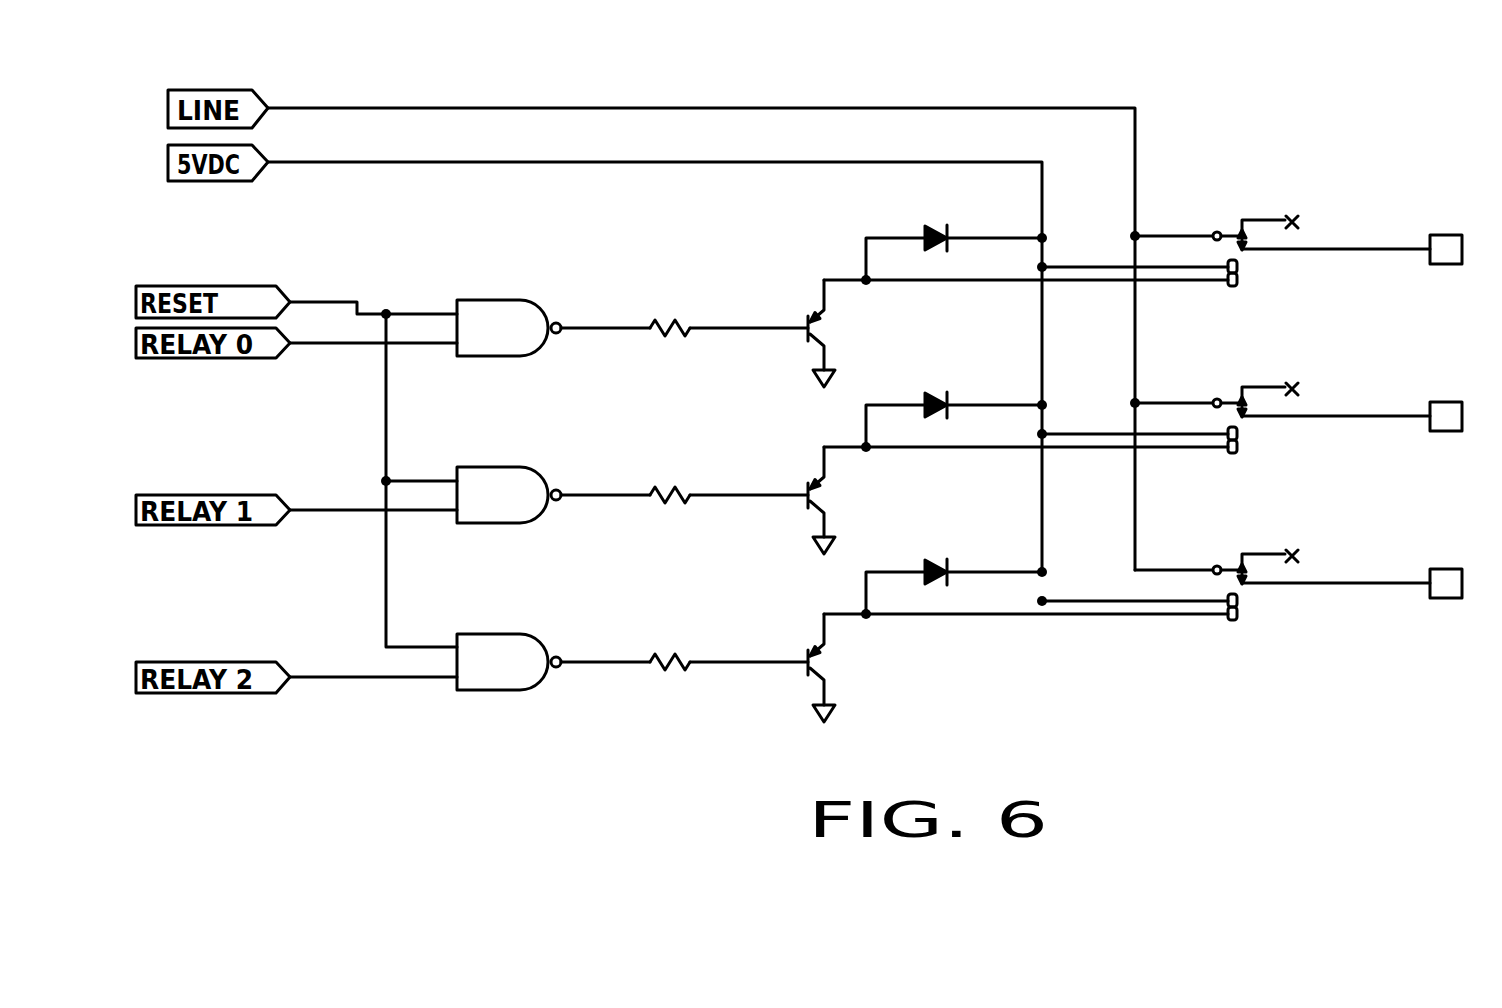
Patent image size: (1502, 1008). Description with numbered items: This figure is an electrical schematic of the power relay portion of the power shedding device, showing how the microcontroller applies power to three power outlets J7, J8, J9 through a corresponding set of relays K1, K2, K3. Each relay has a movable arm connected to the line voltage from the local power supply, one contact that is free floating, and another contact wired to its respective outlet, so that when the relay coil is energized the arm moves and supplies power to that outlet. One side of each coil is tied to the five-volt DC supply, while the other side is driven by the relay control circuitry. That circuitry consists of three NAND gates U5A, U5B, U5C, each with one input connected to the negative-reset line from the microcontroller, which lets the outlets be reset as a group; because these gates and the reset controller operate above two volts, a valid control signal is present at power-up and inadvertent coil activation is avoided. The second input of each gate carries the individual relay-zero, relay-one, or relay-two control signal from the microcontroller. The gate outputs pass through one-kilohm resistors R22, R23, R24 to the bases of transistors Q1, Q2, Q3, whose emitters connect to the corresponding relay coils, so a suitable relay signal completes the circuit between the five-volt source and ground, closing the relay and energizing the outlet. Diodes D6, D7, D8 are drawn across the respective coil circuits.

The NAND gate U5A is at (522, 341).
The NAND gate U5B is at (522, 508).
The NAND gate U5C is at (522, 675).
The resistor R22 is at (672, 325).
The resistor R23 is at (672, 492).
The resistor R24 is at (672, 659).
The transistor Q1 is at (842, 327).
The transistor Q2 is at (842, 494).
The transistor Q3 is at (842, 661).
The diode D6 is at (934, 226).
The diode D7 is at (934, 393).
The diode D8 is at (934, 560).
The relay K1 is at (1233, 195).
The relay K2 is at (1233, 362).
The relay K3 is at (1233, 529).
The power outlet J7 is at (1443, 235).
The power outlet J8 is at (1443, 402).
The power outlet J9 is at (1443, 569).